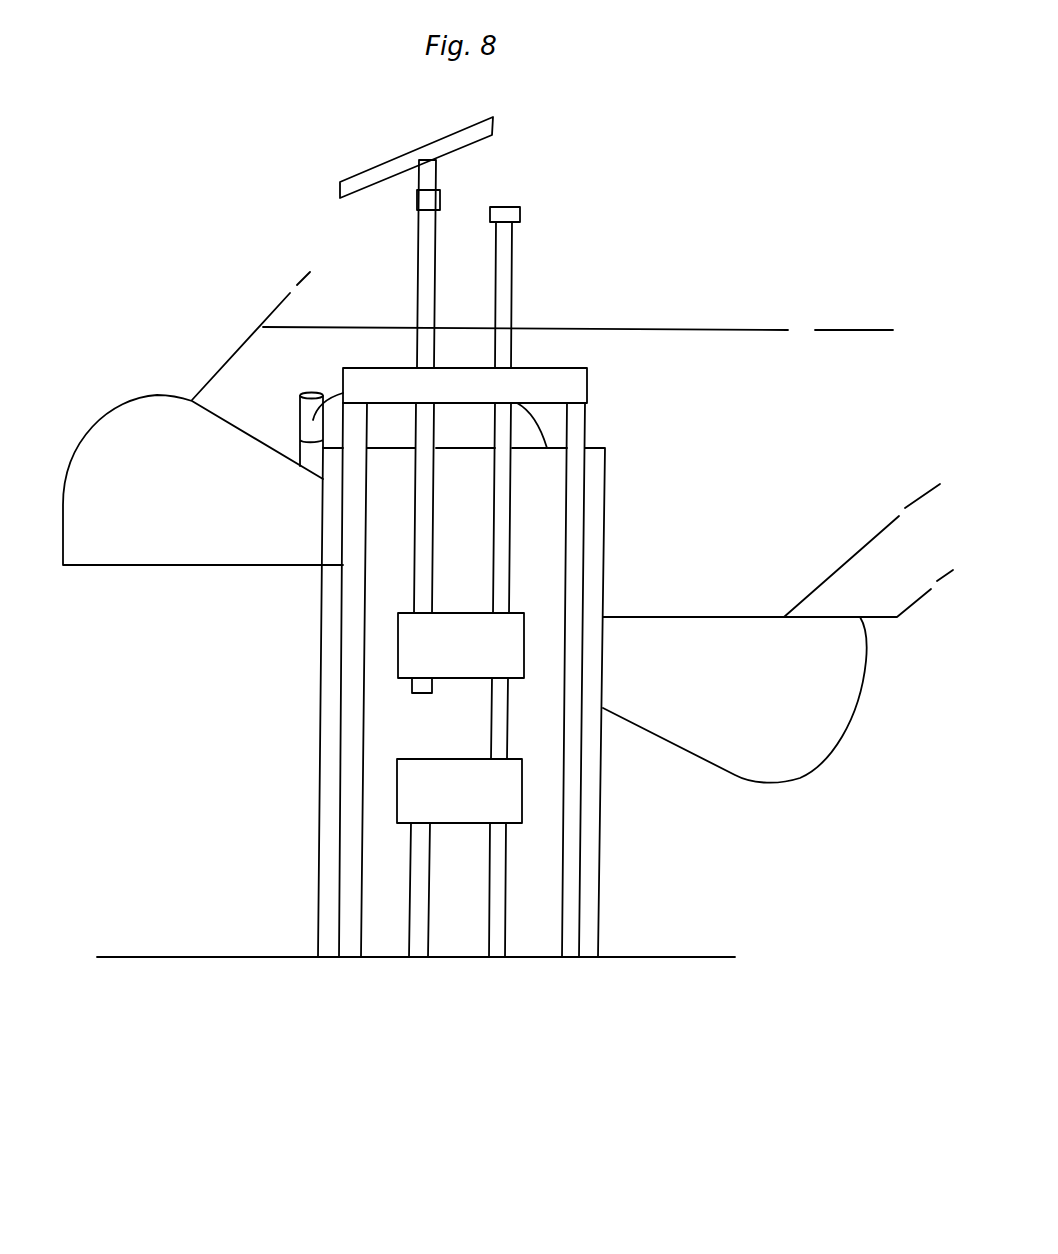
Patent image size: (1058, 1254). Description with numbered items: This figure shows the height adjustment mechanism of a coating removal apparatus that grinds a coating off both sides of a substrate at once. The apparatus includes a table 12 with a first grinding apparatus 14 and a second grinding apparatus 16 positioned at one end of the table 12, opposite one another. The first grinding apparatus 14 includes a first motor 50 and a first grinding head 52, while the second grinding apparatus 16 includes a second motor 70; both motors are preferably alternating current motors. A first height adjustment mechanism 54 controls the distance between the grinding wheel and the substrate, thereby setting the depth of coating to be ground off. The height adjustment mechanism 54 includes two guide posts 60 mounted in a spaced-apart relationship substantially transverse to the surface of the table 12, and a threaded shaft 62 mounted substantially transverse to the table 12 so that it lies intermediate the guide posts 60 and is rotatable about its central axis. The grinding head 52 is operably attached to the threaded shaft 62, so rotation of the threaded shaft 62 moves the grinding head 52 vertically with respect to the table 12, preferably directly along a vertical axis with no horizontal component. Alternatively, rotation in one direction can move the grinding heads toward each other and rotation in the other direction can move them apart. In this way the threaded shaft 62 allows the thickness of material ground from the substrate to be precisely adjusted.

The table 12 is at (723, 353).
The first grinding apparatus 14 is at (199, 449).
The second grinding apparatus 16 is at (778, 703).
The first motor 50 is at (120, 537).
The first grinding head 52 is at (322, 440).
The first height adjustment mechanism 54 is at (377, 383).
The guide posts 60 is at (351, 638).
The threaded shaft 62 is at (428, 245).
The second motor 70 is at (731, 806).